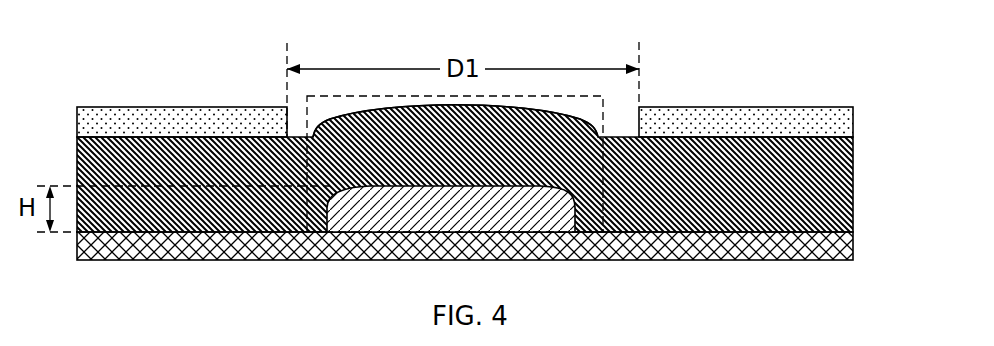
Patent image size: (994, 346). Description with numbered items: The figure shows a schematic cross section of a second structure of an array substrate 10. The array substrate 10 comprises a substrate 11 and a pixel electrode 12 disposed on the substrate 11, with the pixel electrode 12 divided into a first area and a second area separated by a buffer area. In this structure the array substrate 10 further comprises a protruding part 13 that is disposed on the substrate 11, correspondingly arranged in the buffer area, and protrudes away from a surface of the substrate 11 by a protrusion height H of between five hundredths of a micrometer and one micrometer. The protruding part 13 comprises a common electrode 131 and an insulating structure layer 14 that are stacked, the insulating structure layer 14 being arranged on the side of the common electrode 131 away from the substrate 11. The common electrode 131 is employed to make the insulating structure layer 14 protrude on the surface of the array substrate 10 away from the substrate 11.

The array substrate 10 is at (110, 66).
The substrate 11 is at (843, 247).
The pixel electrode 12 is at (840, 118).
The protruding part 13 is at (613, 212).
The common electrode 131 is at (528, 209).
The insulating structure layer 14 is at (843, 203).